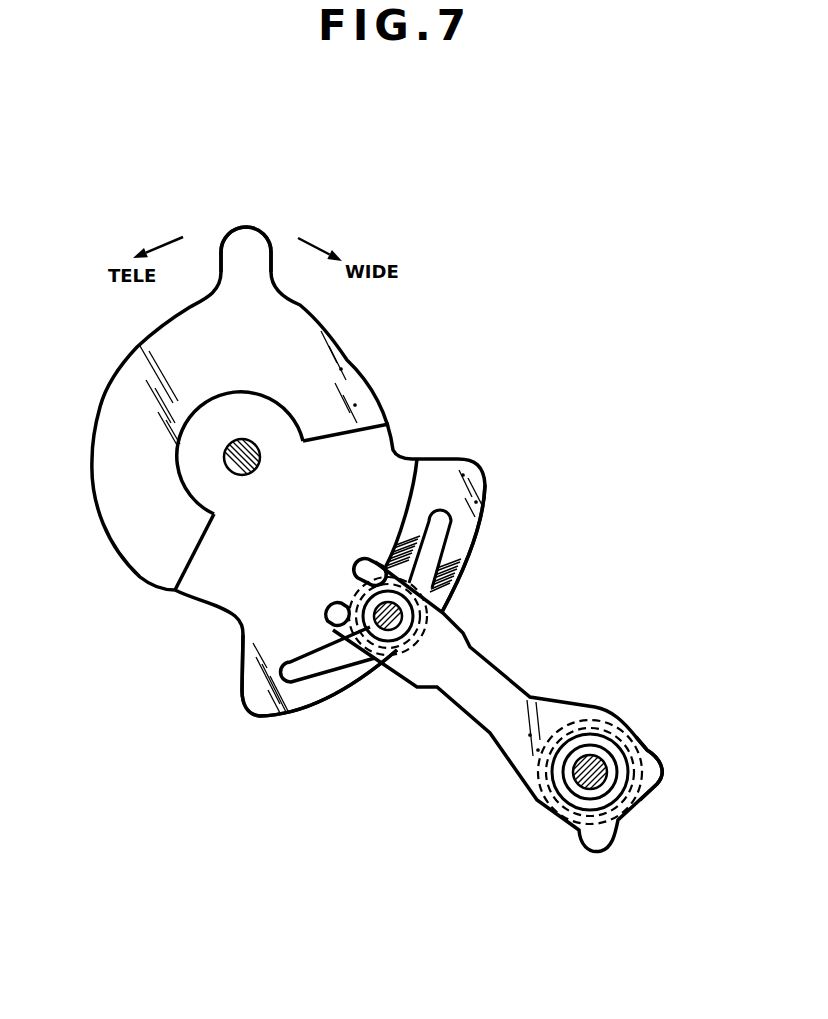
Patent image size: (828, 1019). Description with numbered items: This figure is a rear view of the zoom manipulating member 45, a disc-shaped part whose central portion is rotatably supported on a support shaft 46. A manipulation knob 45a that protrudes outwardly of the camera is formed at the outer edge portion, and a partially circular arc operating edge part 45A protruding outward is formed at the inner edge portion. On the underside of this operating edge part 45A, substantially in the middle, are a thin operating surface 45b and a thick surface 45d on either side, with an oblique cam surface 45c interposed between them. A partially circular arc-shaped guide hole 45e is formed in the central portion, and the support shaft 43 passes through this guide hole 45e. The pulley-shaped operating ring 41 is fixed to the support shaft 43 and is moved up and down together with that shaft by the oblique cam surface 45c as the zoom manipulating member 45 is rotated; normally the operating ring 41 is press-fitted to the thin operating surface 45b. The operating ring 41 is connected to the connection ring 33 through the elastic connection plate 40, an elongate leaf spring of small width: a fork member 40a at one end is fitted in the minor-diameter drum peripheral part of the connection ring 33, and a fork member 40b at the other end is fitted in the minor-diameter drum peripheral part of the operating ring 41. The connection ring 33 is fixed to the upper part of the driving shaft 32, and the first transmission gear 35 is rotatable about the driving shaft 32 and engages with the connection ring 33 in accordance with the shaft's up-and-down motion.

The driving shaft 32 is at (597, 782).
The connection ring 33 is at (612, 770).
The first transmission gear 35 is at (643, 792).
The elastic connection plate 40 is at (498, 688).
The fork member 40a is at (653, 752).
The fork member 40b is at (330, 606).
The operating ring 41 is at (352, 647).
The support shaft 43 is at (397, 678).
The zoom manipulating member 45 is at (258, 708).
The manipulation knob 45a is at (243, 240).
The operating edge part 45A is at (499, 482).
The thin operating surface 45b is at (313, 700).
The oblique cam surface 45c is at (457, 594).
The thick surface 45d is at (468, 524).
The guide hole 45e is at (440, 507).
The support shaft 46 is at (224, 459).